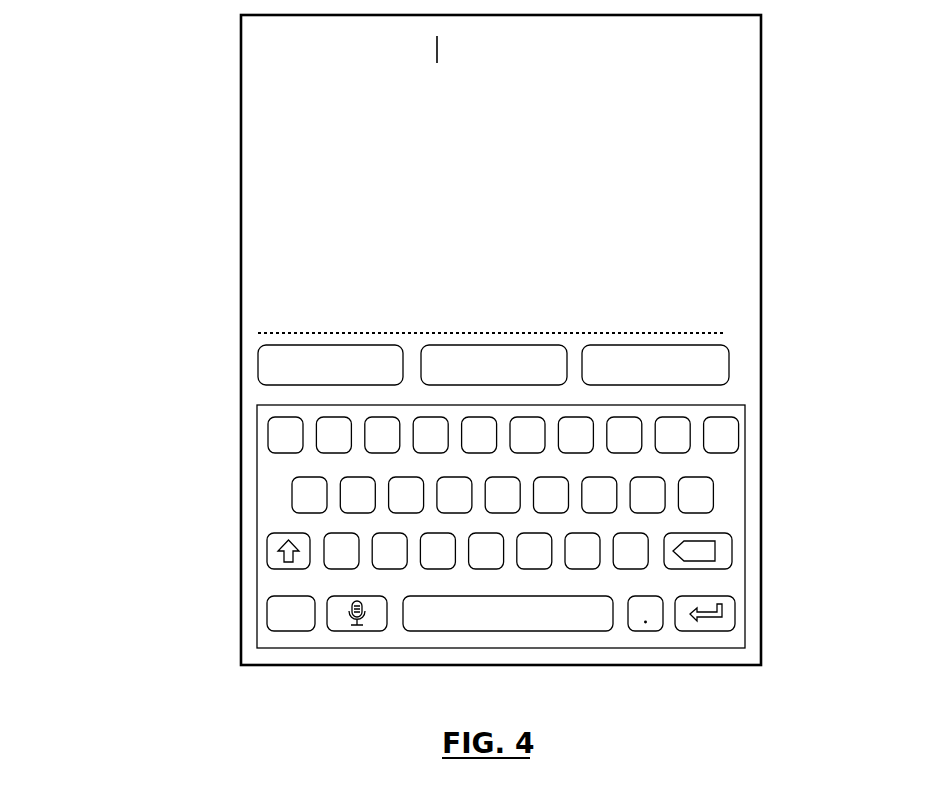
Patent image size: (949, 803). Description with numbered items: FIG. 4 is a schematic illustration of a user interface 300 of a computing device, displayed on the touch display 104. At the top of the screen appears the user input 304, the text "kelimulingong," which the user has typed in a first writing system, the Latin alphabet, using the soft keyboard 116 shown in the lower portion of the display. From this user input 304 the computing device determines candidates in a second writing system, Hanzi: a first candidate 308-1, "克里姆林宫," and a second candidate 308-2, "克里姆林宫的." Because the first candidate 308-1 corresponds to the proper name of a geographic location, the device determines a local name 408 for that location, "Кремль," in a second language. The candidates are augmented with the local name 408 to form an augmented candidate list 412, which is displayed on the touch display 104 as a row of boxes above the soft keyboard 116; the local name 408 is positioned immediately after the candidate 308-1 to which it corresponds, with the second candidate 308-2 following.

The user interface 300 is at (843, 135).
The user input 304 is at (262, 51).
The display 104 is at (241, 264).
The first candidate 308-1 is at (258, 367).
The local name 408 is at (507, 345).
The second candidate 308-2 is at (652, 346).
The augmented candidate list 412 is at (513, 341).
The soft keyboard 116 is at (258, 553).